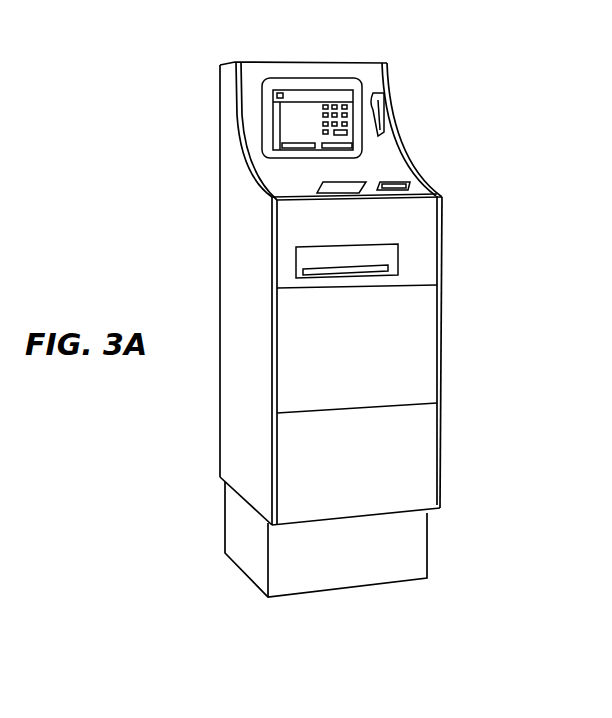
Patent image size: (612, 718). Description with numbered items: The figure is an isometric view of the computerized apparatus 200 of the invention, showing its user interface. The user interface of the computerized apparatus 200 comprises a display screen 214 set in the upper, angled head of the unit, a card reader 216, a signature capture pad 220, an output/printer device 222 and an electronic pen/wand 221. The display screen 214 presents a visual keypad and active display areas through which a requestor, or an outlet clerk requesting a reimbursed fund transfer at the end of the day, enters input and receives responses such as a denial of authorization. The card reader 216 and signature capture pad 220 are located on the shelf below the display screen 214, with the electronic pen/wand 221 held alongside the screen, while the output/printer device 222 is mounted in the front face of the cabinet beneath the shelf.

The computerized apparatus 200 is at (162, 85).
The display screen 214 is at (273, 117).
The electronic pen/wand 221 is at (385, 130).
The signature capture pad 220 is at (360, 181).
The card reader 216 is at (410, 187).
The output/printer device 222 is at (387, 254).